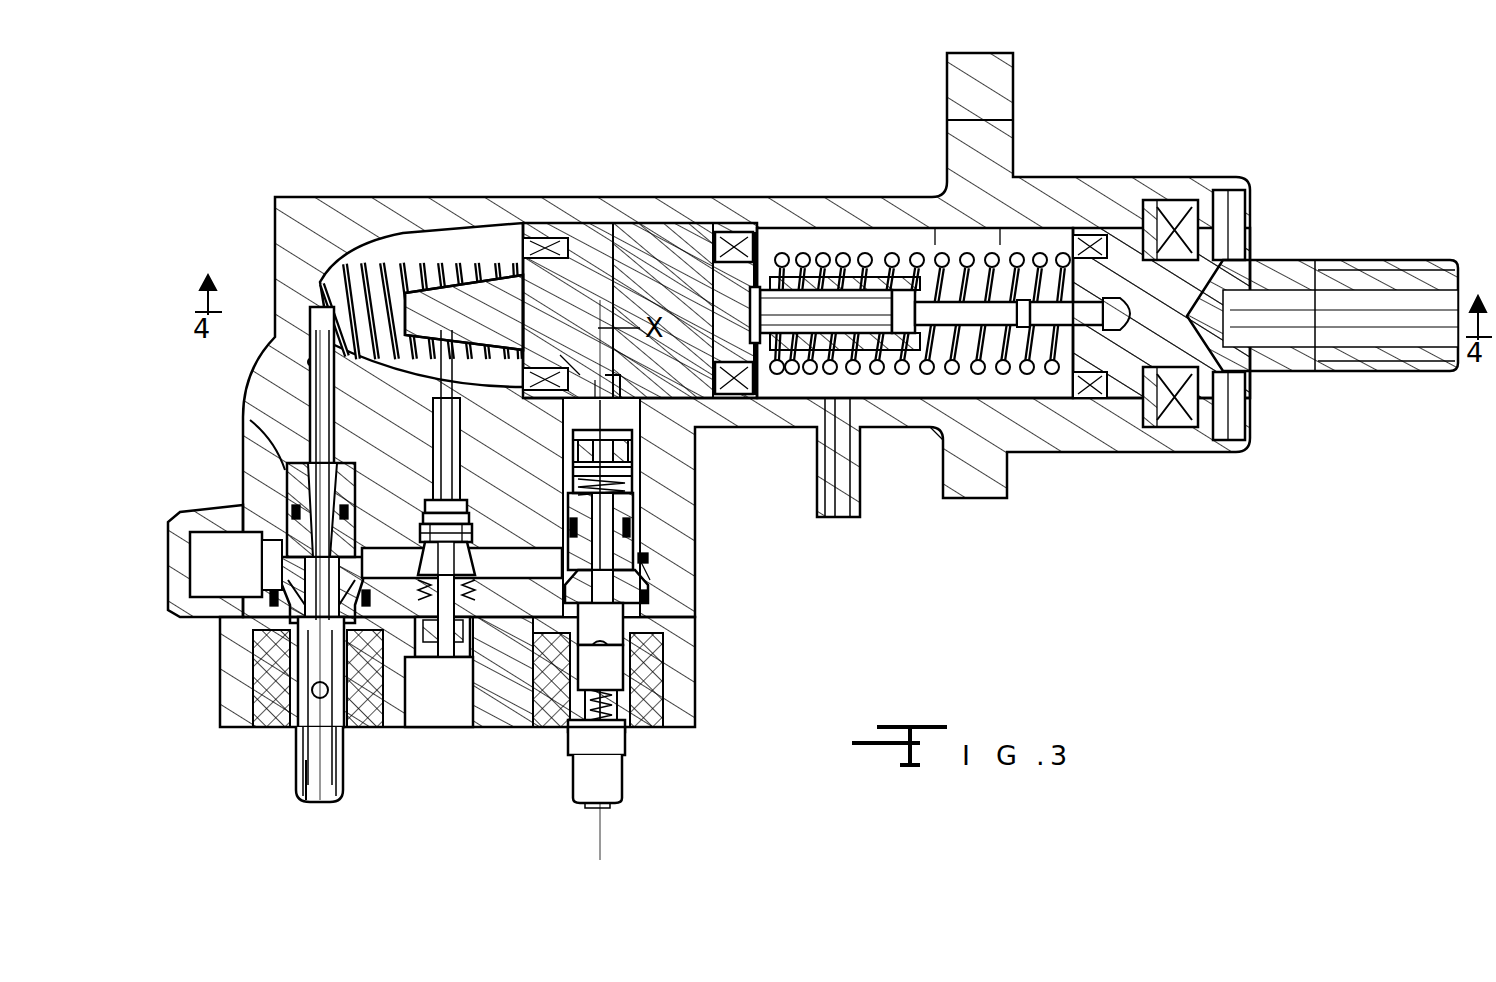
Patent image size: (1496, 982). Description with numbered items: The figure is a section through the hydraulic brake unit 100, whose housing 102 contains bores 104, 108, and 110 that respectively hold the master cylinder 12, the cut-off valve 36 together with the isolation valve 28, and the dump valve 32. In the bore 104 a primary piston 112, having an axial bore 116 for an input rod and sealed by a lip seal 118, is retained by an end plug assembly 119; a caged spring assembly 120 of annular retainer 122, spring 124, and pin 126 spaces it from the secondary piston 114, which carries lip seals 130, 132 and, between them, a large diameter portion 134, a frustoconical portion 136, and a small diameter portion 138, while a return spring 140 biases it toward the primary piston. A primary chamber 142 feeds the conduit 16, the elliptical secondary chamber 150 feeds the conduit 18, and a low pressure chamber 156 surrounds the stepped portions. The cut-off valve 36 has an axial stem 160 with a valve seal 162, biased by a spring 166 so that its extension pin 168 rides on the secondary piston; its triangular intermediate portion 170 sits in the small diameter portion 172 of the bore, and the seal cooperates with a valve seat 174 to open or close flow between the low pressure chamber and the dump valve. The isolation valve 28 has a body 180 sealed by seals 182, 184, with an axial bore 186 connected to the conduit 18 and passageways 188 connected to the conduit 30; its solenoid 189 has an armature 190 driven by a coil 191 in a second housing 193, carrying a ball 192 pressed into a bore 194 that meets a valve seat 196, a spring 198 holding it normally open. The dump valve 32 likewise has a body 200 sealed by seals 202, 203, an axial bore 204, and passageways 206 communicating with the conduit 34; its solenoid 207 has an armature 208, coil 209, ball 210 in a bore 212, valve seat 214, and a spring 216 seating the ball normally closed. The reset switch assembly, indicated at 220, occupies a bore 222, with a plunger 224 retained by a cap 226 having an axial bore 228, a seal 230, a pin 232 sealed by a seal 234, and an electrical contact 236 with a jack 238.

The hydraulic brake unit 100 is at (1212, 138).
The housing 102 is at (300, 215).
The bore 104 is at (1060, 228).
The bore 108 is at (513, 380).
The bore 110 is at (262, 425).
The primary piston 112 is at (1268, 268).
The secondary piston 114 is at (592, 255).
The axial bore 116 is at (1368, 285).
The elastomeric lip seal 118 is at (1097, 232).
The end plug assembly 119 is at (1250, 212).
The caged spring assembly 120 is at (887, 245).
The annular retainer 122 is at (860, 285).
The spring 124 is at (945, 262).
The pin 126 is at (950, 365).
The elastomeric lip seal 130 is at (838, 275).
The elastomeric lip seal 132 is at (548, 240).
The cylindrical large diameter portion 134 is at (622, 255).
The frustoconical portion 136 is at (702, 255).
The cylindrical small diameter portion 138 is at (740, 262).
The return spring 140 is at (415, 232).
The primary chamber 142 is at (1005, 240).
The secondary chamber 150 is at (365, 235).
The low pressure chamber 156 is at (680, 255).
The axial stem 160 is at (570, 462).
The valve seal 162 is at (640, 475).
The spring 166 is at (640, 490).
The extension pin 168 is at (568, 360).
The intermediate portion 170 is at (640, 440).
The small diameter portion 172 is at (615, 402).
The valve seat 174 is at (720, 455).
The body 180 is at (285, 548).
The seal 182 is at (290, 478).
The seal 184 is at (278, 608).
The axial bore 186 is at (288, 510).
The passageways 188 is at (295, 640).
The solenoid 189 is at (303, 805).
The armature 190 is at (338, 808).
The coil 191 is at (300, 727).
The ball 192 is at (290, 760).
The second housing 193 is at (500, 727).
The bore 194 is at (300, 797).
The valve seat 196 is at (345, 780).
The spring 198 is at (292, 690).
The body 200 is at (650, 542).
The seal 202 is at (645, 520).
The seal 203 is at (655, 575).
The axial bore 204 is at (650, 557).
The passageways 206 is at (650, 590).
The solenoid 207 is at (622, 738).
The armature 208 is at (560, 727).
The coil 209 is at (645, 728).
The ball 210 is at (612, 652).
The bore 212 is at (625, 672).
The valve seat 214 is at (625, 628).
The spring 216 is at (620, 710).
The valve 220 is at (485, 778).
The bore 222 is at (455, 442).
The plunger 224 is at (428, 503).
The cap 226 is at (342, 728).
The axial bore 228 is at (424, 555).
The seal 230 is at (470, 555).
The pin 232 is at (470, 600).
The seal 234 is at (425, 518).
The electrical contact 236 is at (433, 700).
The jack 238 is at (450, 700).
The master cylinder 12 is at (1040, 463).
The conduit 16 is at (842, 520).
The conduit 18 is at (305, 362).
The isolation valve 28 is at (232, 810).
The fluid conduit 30 is at (243, 590).
The dump valve 32 is at (633, 785).
The fluid conduit 34 is at (497, 568).
The cut-off valve 36 is at (625, 390).